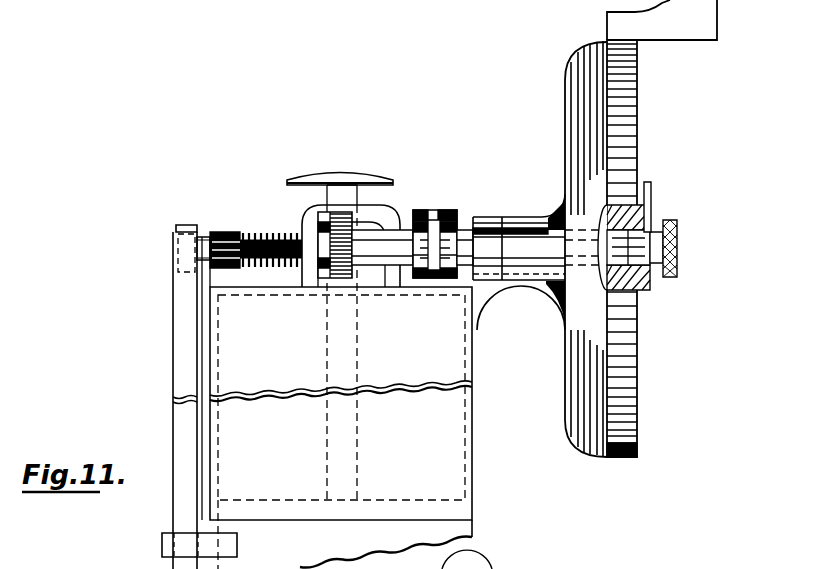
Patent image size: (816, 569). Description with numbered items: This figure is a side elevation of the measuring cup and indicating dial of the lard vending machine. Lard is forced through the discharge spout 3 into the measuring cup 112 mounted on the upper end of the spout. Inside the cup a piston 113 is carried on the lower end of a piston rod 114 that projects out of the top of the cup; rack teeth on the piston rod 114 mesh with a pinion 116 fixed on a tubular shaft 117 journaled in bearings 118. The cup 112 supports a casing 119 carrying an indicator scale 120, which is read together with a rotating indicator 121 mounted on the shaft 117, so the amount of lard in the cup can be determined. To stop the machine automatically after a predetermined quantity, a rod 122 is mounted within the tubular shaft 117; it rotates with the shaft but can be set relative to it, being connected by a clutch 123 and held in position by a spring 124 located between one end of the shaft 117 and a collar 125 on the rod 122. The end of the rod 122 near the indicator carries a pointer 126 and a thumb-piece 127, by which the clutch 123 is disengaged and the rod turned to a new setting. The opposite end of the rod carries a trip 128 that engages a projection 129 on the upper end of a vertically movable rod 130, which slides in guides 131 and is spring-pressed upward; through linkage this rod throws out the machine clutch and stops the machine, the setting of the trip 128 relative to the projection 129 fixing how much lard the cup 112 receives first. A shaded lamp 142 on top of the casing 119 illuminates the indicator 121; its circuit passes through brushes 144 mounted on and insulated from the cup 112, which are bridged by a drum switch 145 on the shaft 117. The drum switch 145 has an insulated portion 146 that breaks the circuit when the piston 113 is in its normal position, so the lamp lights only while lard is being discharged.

The discharge spout 3 is at (270, 552).
The measuring cup 112 is at (347, 387).
The piston 113 is at (413, 489).
The piston rod 114 is at (327, 446).
The pinion 116 is at (339, 211).
The tubular shaft 117 is at (375, 272).
The bearings 118 is at (312, 270).
The casing 119 is at (570, 140).
The indicator scale 120 is at (651, 200).
The rotating indicator 121 is at (637, 282).
The rod 122 is at (205, 236).
The clutch 123 is at (645, 266).
The spring 124 is at (244, 232).
The collar 125 is at (232, 266).
The pointer 126 is at (650, 215).
The thumb-piece 127 is at (678, 245).
The trip 128 is at (183, 224).
The projection 129 is at (177, 236).
The vertically movable rod 130 is at (174, 340).
The guides 131 is at (162, 548).
The shaded lamp 142 is at (695, 36).
The brushes 144 is at (449, 212).
The drum switch 145 is at (448, 280).
The insulated portion 146 is at (428, 212).